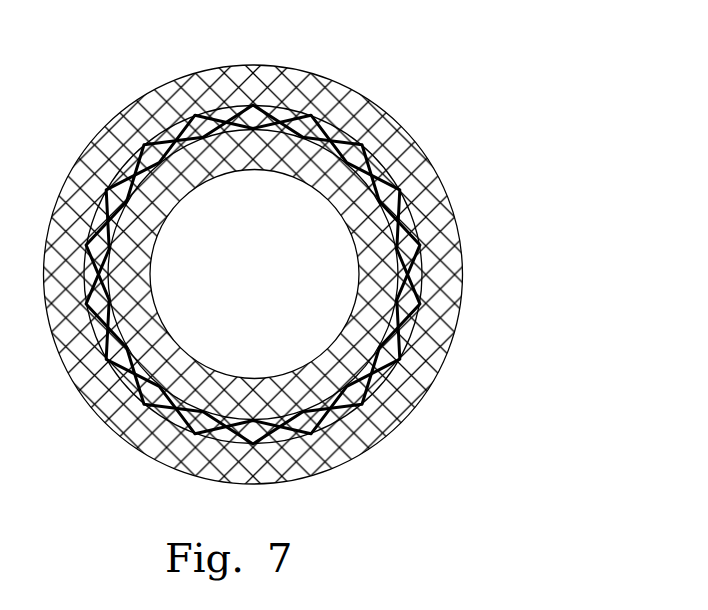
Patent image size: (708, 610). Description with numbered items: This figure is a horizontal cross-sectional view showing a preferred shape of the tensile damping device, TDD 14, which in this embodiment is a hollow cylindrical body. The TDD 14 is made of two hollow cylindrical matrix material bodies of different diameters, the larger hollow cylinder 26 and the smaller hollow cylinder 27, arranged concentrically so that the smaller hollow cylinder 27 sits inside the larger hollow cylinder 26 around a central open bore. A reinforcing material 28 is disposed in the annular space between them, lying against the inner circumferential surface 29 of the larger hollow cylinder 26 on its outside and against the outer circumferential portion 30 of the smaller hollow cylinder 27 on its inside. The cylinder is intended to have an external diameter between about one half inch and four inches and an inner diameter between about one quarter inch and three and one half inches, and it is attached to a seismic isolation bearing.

The TDD 14 is at (412, 140).
The larger hollow cylinder 26 is at (407, 162).
The smaller hollow cylinder 27 is at (358, 213).
The reinforcing material 28 is at (401, 216).
The inner circumferential surface 29 is at (426, 274).
The outer circumferential portion 30 is at (396, 265).